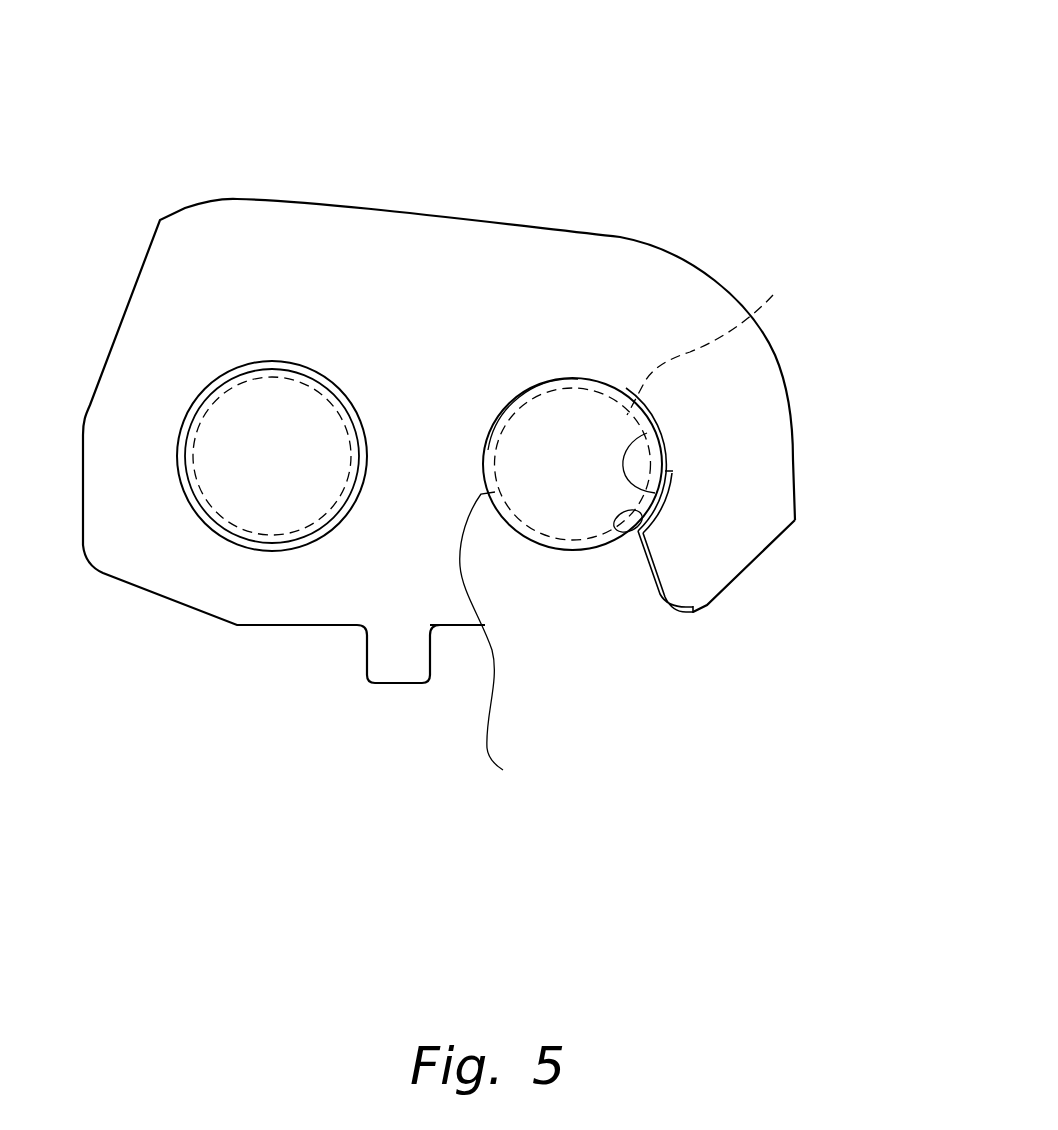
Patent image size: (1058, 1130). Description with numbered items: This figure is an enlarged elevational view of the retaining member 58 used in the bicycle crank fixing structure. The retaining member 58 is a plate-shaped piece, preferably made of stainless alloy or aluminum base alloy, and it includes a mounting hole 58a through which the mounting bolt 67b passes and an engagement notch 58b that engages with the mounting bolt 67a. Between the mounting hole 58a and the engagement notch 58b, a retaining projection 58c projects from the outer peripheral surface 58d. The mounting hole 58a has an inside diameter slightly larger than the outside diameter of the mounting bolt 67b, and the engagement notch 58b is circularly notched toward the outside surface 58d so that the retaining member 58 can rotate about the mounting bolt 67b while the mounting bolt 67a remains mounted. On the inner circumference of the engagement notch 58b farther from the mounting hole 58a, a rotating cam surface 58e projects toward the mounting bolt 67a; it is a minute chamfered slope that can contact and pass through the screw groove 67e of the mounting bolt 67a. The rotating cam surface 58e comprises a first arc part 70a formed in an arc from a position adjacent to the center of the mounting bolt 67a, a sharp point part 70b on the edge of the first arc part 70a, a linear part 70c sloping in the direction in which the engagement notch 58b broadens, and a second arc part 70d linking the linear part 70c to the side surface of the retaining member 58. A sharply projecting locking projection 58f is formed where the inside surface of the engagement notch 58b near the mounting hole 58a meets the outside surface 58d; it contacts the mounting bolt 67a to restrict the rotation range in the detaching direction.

The retaining member 58 is at (543, 190).
The mounting hole 58a is at (203, 393).
The engagement notch 58b is at (497, 491).
The retaining projection 58c is at (400, 667).
The outer peripheral surface 58d is at (305, 627).
The rotating cam surface 58e is at (630, 566).
The locking projection 58f is at (505, 652).
The mounting bolt 67a is at (568, 503).
The mounting bolt 67b is at (293, 430).
The screw groove 67e is at (737, 340).
The first arc part 70a is at (647, 433).
The sharp point part 70b is at (642, 517).
The linear part 70c is at (649, 575).
The second arc part 70d is at (677, 614).